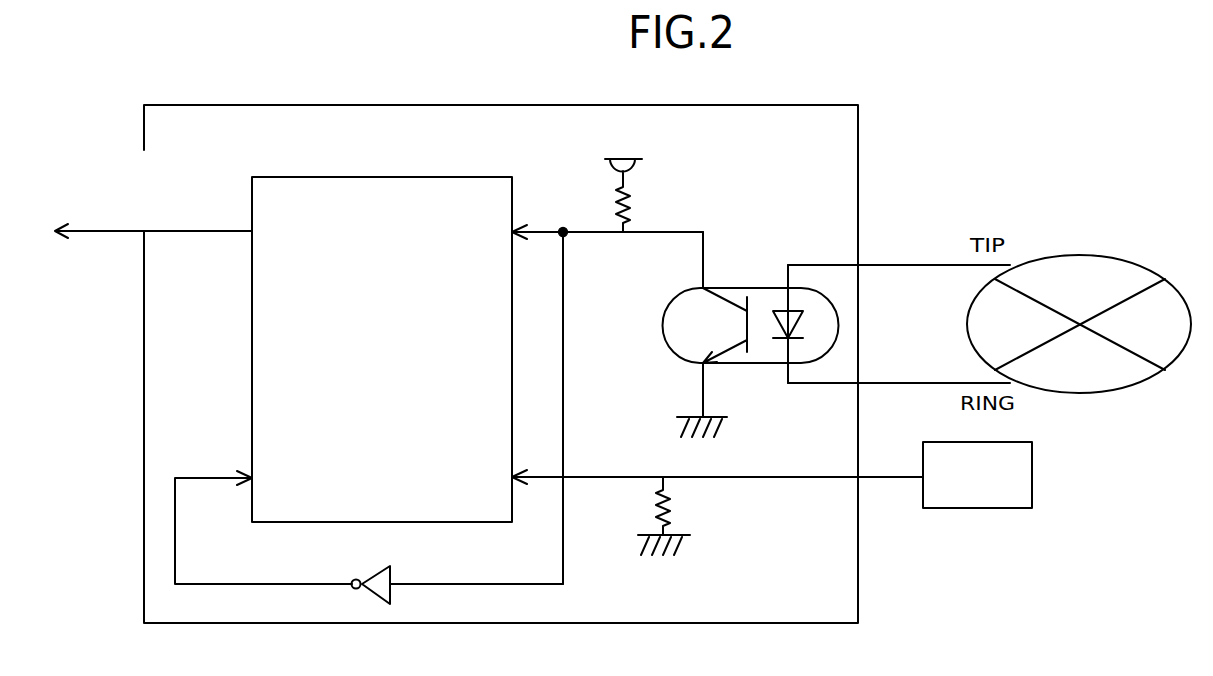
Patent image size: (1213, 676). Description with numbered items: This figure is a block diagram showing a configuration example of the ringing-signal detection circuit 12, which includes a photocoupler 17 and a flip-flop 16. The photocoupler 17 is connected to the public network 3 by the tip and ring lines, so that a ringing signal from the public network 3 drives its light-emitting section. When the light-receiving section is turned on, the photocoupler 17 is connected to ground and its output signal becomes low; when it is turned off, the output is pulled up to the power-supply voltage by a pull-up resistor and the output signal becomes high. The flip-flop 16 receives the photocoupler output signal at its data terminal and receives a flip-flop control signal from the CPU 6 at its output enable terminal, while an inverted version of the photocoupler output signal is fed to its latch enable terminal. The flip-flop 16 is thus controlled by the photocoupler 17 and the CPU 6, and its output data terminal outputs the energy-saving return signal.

The ringing-signal detection circuit 12 is at (500, 106).
The flip-flop 16 is at (252, 344).
The photocoupler 17 is at (750, 286).
The public network 3 is at (1085, 254).
The CPU 6 is at (985, 509).